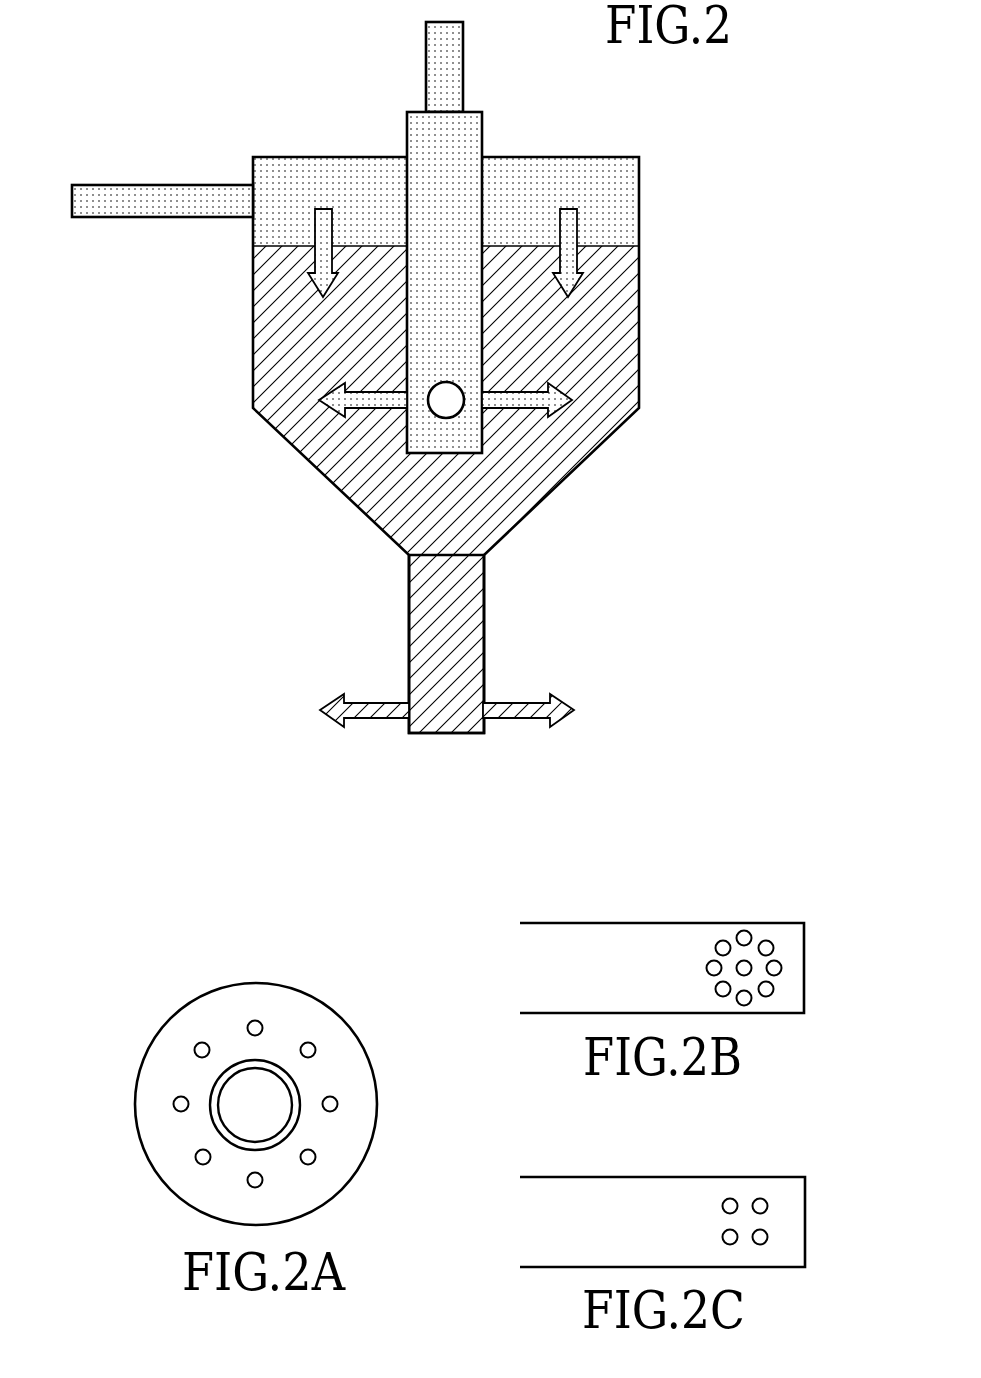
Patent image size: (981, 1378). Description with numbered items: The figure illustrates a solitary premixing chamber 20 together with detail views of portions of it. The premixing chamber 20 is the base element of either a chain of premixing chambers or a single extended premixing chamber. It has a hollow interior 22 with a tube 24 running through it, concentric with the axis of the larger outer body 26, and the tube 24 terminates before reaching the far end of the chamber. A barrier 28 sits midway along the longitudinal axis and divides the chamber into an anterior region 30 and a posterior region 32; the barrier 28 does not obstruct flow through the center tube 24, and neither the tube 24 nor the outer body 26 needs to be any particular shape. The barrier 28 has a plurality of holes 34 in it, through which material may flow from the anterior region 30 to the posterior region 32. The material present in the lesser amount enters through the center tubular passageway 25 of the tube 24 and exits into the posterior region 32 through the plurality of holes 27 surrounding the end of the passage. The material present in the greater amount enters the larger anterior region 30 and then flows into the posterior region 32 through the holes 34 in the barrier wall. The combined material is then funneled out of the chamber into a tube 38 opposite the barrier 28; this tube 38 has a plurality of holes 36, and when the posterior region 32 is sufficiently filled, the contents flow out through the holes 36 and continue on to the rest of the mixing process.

In FIG. 2, the premixing chamber 20 is at (732, 259).
In FIG. 2, the hollow interior 22 is at (438, 403).
In FIG. 2, the tube 24 is at (471, 112).
In FIG. 2A, the tube 24 is at (300, 1103).
In FIG. 2B, the tube 24 is at (623, 923).
In FIG. 2A, the center tubular passageway 25 is at (267, 1118).
In FIG. 2, the outer body 26 is at (72, 127).
In FIG. 2B, the holes 27 is at (766, 941).
In FIG. 2, the barrier 28 is at (302, 243).
In FIG. 2, the anterior region 30 is at (620, 198).
In FIG. 2, the posterior region 32 is at (555, 440).
In FIG. 2A, the holes 34 is at (308, 1043).
In FIG. 2C, the holes 36 is at (730, 1199).
In FIG. 2, the tube 38 is at (410, 648).
In FIG. 2C, the tube 38 is at (633, 1177).